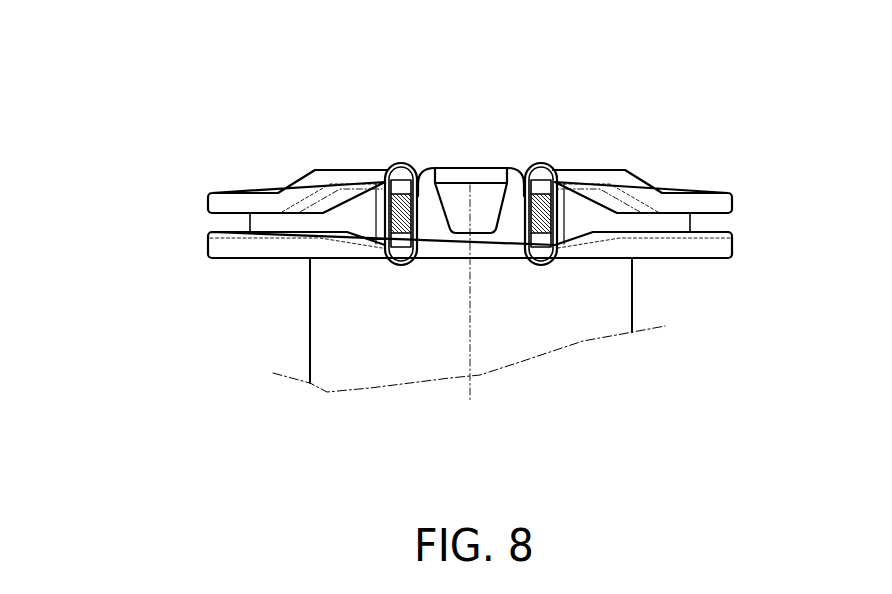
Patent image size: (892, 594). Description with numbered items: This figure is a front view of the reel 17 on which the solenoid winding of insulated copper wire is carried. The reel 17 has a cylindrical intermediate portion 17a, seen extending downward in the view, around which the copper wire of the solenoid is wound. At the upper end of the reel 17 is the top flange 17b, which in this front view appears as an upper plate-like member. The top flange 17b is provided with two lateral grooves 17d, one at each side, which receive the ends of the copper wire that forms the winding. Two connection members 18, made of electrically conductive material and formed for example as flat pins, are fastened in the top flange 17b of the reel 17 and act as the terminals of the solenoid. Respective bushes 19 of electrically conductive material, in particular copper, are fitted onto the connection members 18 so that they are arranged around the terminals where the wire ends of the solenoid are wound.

The reel 17 is at (240, 166).
The cylindrical intermediate portion 17a is at (338, 315).
The top flange 17b is at (710, 192).
The lateral grooves 17d is at (225, 218).
The connection members 18 is at (374, 188).
The bushes 19 is at (401, 163).